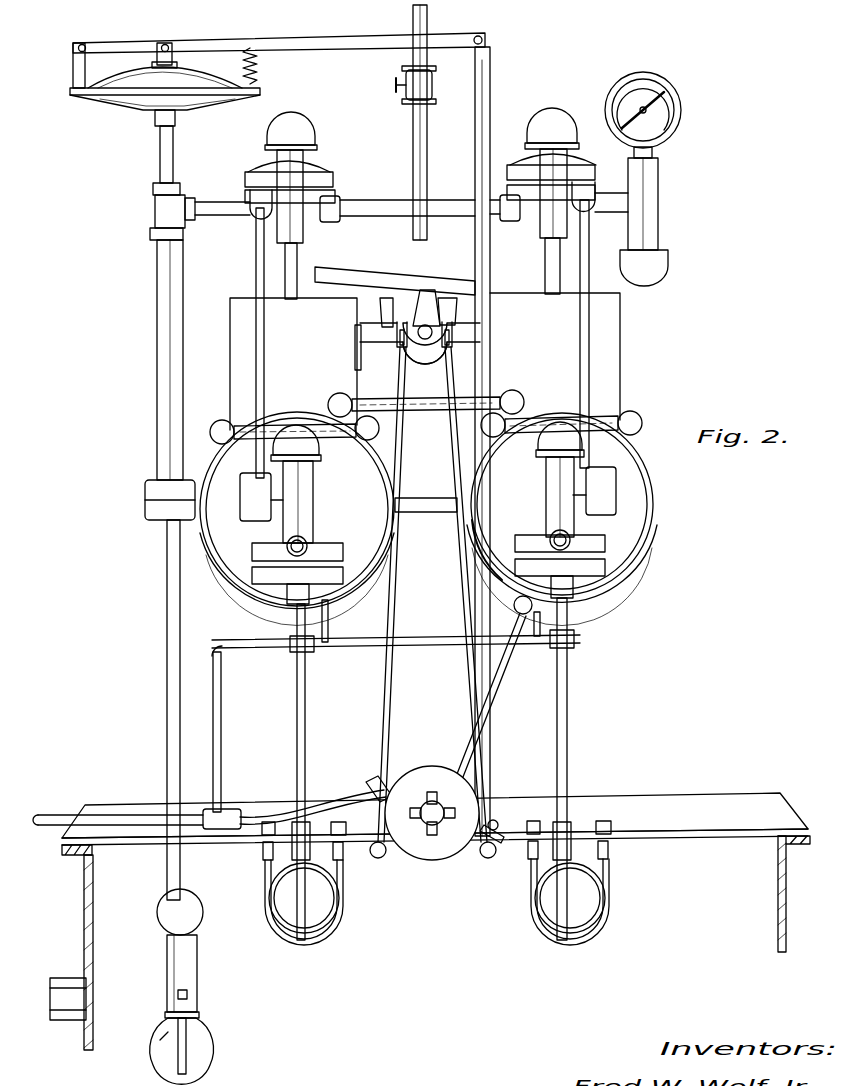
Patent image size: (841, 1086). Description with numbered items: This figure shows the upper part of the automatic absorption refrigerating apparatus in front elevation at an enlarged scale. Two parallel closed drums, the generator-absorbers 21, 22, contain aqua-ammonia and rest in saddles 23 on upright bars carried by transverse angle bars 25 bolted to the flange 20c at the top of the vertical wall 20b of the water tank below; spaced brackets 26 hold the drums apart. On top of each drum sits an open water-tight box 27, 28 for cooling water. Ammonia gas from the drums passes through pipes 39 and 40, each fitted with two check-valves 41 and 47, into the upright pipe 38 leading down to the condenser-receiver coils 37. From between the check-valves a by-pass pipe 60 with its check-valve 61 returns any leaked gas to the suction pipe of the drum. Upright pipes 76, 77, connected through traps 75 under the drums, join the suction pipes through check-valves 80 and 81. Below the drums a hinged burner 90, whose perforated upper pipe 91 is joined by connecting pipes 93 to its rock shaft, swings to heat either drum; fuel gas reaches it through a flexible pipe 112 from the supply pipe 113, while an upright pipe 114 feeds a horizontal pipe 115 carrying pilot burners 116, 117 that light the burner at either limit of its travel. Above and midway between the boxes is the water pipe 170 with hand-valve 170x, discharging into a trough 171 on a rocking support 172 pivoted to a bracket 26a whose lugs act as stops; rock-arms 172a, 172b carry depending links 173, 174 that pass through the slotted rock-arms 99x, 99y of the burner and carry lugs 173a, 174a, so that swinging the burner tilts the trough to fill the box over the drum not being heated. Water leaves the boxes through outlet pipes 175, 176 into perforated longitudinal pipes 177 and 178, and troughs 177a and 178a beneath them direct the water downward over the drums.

The water supply pipe 170 is at (413, 115).
The hand-valve 170x is at (404, 78).
The check-valve 47 is at (312, 168).
The check-valve 41 is at (255, 230).
The pipe 40 is at (298, 244).
The pipe 39 is at (545, 256).
The by-pass pipe 60 is at (256, 277).
The trough 171 is at (366, 274).
The rocking support 172 is at (427, 290).
The rock-arm 172a is at (395, 332).
The rock-arm 172b is at (455, 333).
The bracket 26a is at (375, 345).
The box or tank 28 is at (230, 360).
The box or tank 27 is at (612, 367).
The depending link 173 is at (388, 692).
The depending link 174 is at (474, 676).
The perforated pipe 177 is at (352, 426).
The trough 177a is at (368, 452).
The outlet pipe 176 is at (340, 394).
The perforated pipe 178 is at (620, 414).
The trough 178a is at (640, 420).
The outlet pipe 175 is at (514, 390).
The generator-absorber drum 22 is at (297, 509).
The generator-absorber drum 21 is at (562, 504).
The check-valve 61 is at (238, 494).
The check-valve 81 is at (310, 520).
The check-valve 80 is at (262, 575).
The saddle 23 is at (470, 548).
The bracket 26 is at (428, 512).
The upright pipe 77 is at (297, 703).
The upright pipe 76 is at (567, 697).
The pilot burner 117 is at (328, 627).
The horizontal pipe 115 is at (366, 650).
The upright pipe 114 is at (221, 724).
The burner pipe 91 is at (512, 604).
The pilot burner 116 is at (535, 636).
The connecting pipe 93 is at (472, 726).
The burner 90 is at (428, 766).
The slotted rock-arm 99x is at (372, 780).
The flexible pipe 112 is at (328, 805).
The fuel gas supply pipe 113 is at (66, 813).
The angle bar 25 is at (628, 792).
The flange 20c is at (788, 850).
The vertical wall 20b is at (778, 884).
The trap 75 is at (330, 880).
The lug 173a is at (382, 858).
The lug 174a is at (485, 858).
The slotted rock-arm 99y is at (496, 852).
The upright pipe 38 is at (167, 724).
The condenser-receiver coil 37 is at (205, 1036).